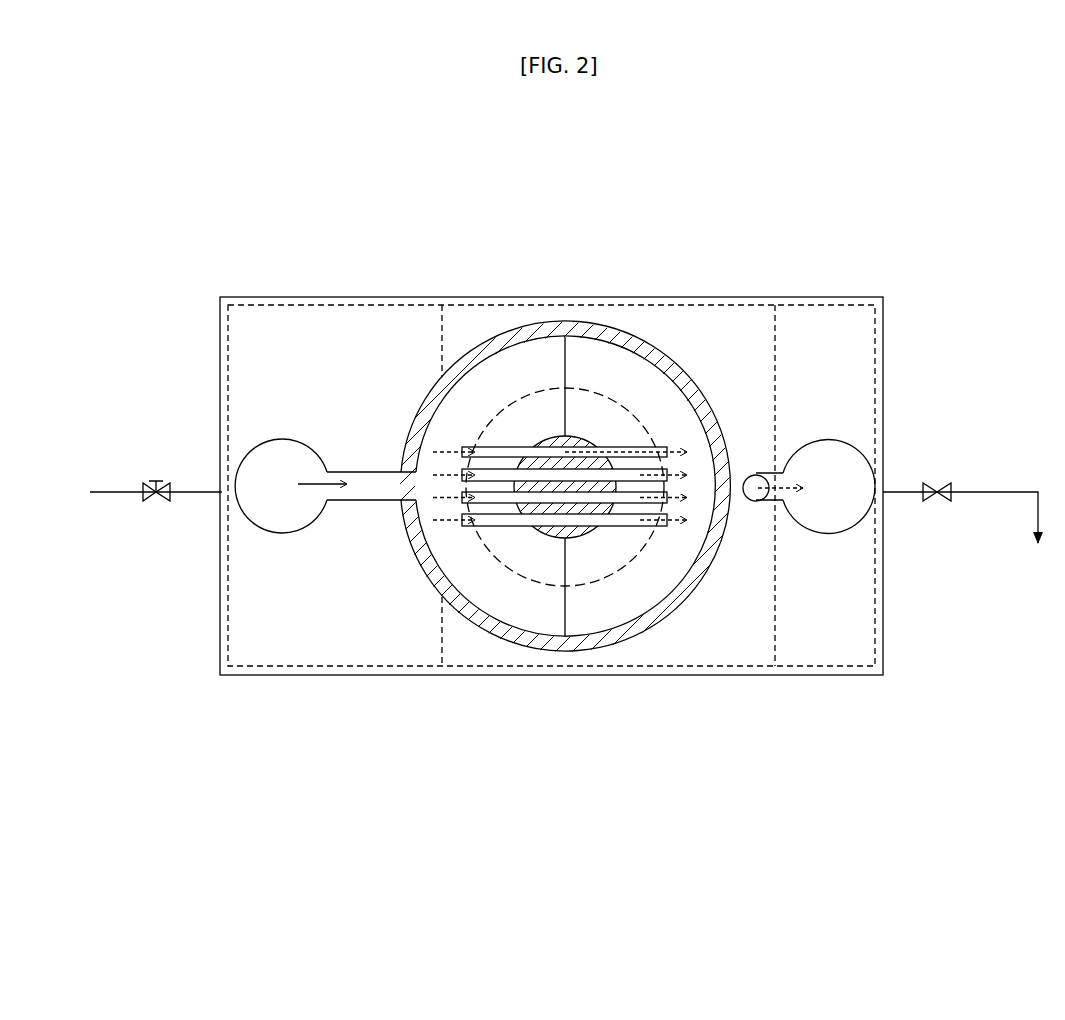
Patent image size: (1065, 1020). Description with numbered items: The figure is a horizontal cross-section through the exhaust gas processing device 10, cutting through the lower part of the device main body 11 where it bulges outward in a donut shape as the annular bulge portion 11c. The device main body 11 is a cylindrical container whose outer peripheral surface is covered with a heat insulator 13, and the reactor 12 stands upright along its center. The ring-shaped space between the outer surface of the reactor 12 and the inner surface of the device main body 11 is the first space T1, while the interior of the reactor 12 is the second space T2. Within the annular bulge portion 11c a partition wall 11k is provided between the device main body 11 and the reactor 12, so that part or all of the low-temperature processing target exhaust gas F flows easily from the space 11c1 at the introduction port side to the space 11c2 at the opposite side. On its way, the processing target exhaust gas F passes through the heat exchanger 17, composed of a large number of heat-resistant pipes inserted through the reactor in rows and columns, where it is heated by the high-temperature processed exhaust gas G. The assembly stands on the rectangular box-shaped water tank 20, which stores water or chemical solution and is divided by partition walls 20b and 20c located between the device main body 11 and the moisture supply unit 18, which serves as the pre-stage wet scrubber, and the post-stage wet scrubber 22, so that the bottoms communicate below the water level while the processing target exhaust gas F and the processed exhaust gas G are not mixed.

The exhaust gas processing device 10 is at (300, 248).
The device main body 11 is at (528, 491).
The annular bulge portion 11c is at (577, 652).
The space at the introduction port side 11c1 is at (470, 412).
The space at the opposite side 11c2 is at (615, 378).
The partition wall 11k is at (565, 372).
The reactor 12 is at (544, 537).
The heat insulator 13 is at (428, 565).
The heat exchanger 17 is at (612, 527).
The moisture supply unit 18 is at (243, 508).
The water tank 20 is at (370, 697).
The partition wall 20b is at (442, 598).
The partition wall 20c is at (775, 620).
The post-stage wet scrubber 22 is at (863, 515).
The first space T1 is at (537, 410).
The second space T2 is at (563, 490).
The processing target exhaust gas F is at (327, 472).
The processed exhaust gas G is at (778, 485).